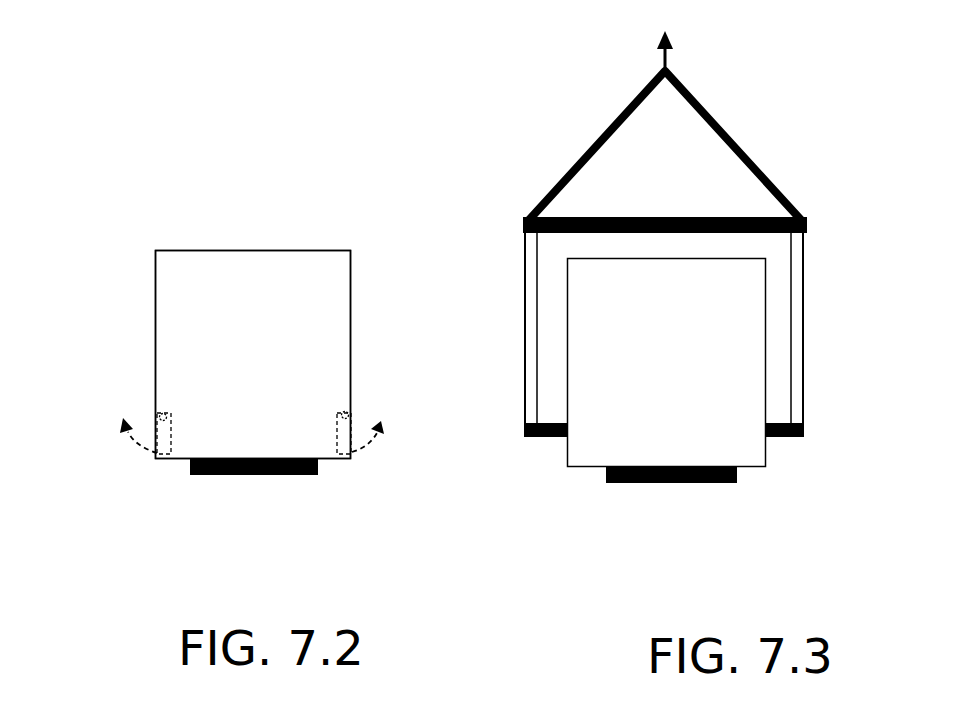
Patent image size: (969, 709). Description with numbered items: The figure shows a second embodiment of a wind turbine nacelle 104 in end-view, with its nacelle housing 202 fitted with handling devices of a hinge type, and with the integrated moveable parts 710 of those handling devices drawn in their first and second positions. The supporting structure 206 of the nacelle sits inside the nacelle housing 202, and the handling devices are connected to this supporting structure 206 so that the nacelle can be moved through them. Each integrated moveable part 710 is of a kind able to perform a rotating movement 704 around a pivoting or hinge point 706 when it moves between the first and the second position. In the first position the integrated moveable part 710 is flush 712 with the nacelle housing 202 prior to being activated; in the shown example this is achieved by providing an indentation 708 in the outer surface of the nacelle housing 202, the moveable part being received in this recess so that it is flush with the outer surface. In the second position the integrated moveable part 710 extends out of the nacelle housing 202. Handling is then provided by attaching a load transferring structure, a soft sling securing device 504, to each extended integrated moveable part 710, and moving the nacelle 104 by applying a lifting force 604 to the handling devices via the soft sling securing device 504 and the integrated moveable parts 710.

In FIG. 7.2, the nacelle 104 is at (144, 214).
In FIG. 7.2, the nacelle housing 202 is at (352, 318).
In FIG. 7.3, the nacelle housing 202 is at (766, 340).
In FIG. 7.2, the supporting structure 206 is at (235, 475).
In FIG. 7.3, the supporting structure 206 is at (627, 483).
In FIG. 7.3, the soft sling securing device 504 is at (524, 258).
In FIG. 7.3, the lifting force 604 is at (670, 43).
In FIG. 7.2, the rotating movement 704 is at (133, 440).
In FIG. 7.2, the pivoting or hinge point 706 is at (160, 416).
In FIG. 7.2, the indentation 708 is at (338, 428).
In FIG. 7.3, the integrated moveable part 710 is at (548, 437).
In FIG. 7.2, the flush 712 is at (352, 428).